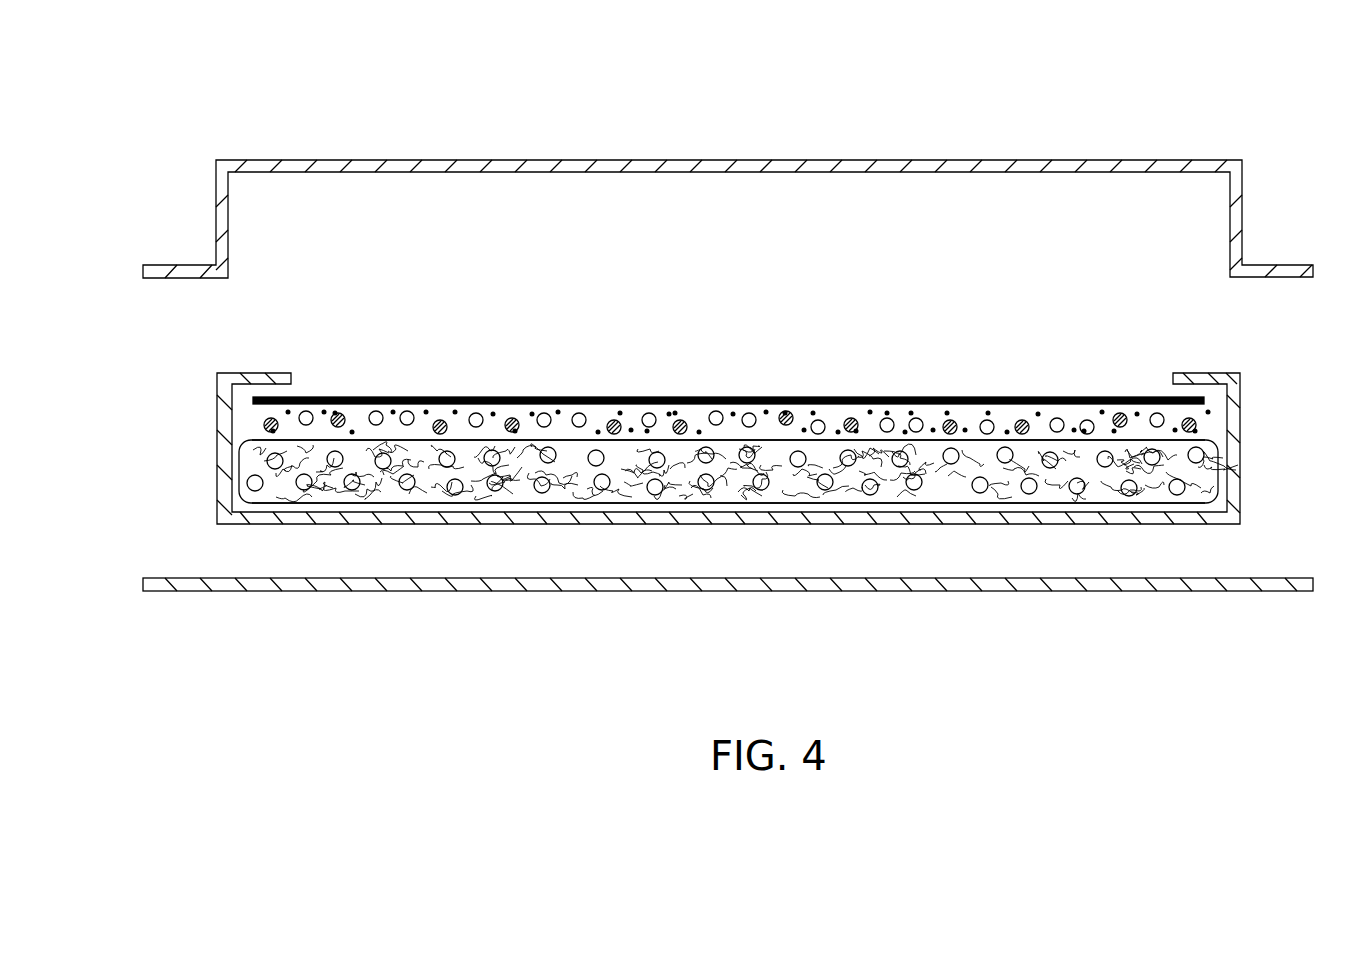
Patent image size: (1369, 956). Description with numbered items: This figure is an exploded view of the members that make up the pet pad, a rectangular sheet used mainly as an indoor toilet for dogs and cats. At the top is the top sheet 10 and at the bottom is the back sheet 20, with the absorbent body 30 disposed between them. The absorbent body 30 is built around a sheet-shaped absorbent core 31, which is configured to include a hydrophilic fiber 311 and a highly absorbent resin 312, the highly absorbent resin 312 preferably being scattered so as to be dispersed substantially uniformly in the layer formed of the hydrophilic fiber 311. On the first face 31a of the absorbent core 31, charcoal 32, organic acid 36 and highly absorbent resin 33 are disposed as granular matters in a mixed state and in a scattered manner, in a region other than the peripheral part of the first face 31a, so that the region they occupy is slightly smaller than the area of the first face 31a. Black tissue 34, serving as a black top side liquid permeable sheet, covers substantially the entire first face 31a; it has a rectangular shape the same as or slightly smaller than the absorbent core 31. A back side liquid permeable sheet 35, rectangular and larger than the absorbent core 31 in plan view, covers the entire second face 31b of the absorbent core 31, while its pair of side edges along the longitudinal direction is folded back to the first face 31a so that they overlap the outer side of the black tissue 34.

The top sheet 10 is at (267, 159).
The back sheet 20 is at (287, 593).
The absorbent body 30 is at (671, 415).
The absorbent core 31 is at (793, 449).
The hydrophilic fiber 311 is at (1218, 482).
The highly absorbent resin 312 is at (776, 393).
The first face 31a is at (436, 440).
The second face 31b is at (455, 505).
The charcoal 32 is at (675, 409).
The highly absorbent resin 33 is at (582, 414).
The black tissue 34 is at (336, 396).
The back side liquid permeable sheet 35 is at (272, 372).
The organic acid 36 is at (509, 420).